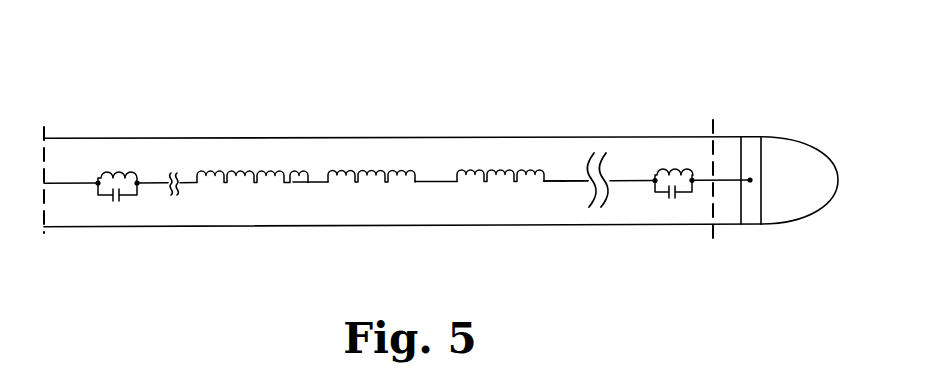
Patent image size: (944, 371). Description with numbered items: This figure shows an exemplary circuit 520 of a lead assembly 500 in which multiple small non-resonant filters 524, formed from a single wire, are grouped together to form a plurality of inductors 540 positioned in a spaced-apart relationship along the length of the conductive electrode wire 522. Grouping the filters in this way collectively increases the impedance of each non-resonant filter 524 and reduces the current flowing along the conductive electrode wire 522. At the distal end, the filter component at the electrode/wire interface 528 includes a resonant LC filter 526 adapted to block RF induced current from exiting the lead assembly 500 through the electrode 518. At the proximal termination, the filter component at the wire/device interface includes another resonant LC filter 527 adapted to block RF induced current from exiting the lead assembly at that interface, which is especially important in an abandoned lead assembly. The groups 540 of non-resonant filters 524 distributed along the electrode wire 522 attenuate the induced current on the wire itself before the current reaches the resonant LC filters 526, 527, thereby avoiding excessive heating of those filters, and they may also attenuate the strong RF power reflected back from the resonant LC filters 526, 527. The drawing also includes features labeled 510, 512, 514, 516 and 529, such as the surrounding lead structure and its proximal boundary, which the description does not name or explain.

The lead assembly 500 is at (497, 78).
The lead body 510 is at (328, 137).
The distal tip 512 is at (815, 140).
The lumen 514 is at (180, 160).
The conductor 516 is at (433, 163).
The electrode 518 is at (750, 143).
The circuit 520 is at (575, 178).
The conductive electrode wire 522 is at (563, 184).
The non-resonant filters 524 is at (213, 170).
The resonant LC filter 526 is at (677, 165).
The resonant LC filter 527 is at (128, 200).
The electrode/wire interface 528 is at (714, 240).
The proximal region boundary 529 is at (44, 233).
The inductors 540 is at (468, 190).